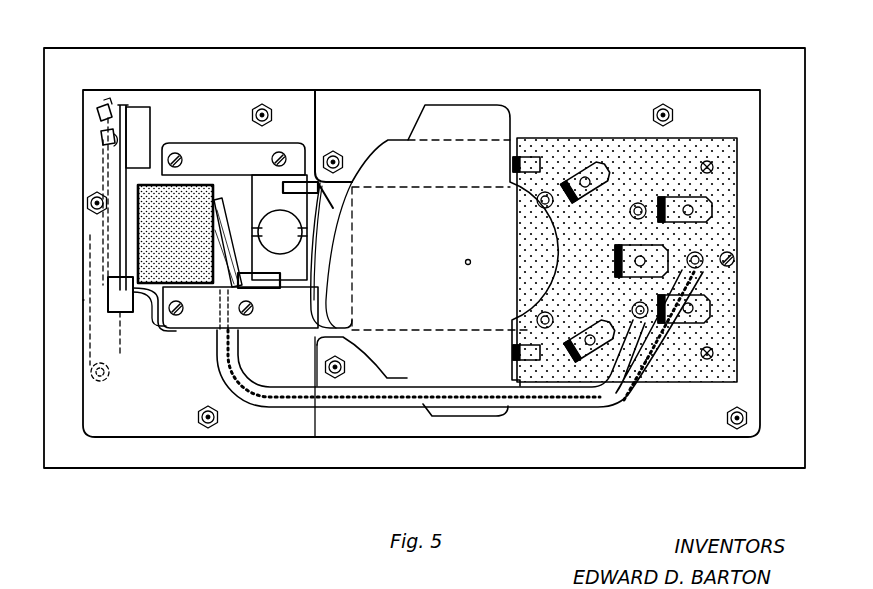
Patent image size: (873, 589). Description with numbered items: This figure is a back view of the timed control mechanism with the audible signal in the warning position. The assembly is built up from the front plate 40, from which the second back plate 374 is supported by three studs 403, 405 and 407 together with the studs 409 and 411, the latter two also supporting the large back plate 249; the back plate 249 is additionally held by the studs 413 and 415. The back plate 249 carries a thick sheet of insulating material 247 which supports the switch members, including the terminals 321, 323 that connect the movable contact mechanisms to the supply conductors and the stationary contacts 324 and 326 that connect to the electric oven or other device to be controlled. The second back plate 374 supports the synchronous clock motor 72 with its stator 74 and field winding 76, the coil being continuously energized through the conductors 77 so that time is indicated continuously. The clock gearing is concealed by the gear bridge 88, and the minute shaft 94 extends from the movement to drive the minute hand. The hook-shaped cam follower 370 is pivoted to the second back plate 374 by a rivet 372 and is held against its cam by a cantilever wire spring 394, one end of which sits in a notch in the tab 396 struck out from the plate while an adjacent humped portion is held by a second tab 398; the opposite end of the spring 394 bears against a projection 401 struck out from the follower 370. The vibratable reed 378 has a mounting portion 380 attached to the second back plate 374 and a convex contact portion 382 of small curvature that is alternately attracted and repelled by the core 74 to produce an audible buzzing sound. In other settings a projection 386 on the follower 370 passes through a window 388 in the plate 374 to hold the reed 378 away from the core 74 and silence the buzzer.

The front plate 40 is at (461, 48).
The synchronous clock motor 72 is at (328, 219).
The stator 74 is at (308, 300).
The field winding 76 is at (196, 200).
The conductors 77 is at (400, 398).
The gear bridge and cover 88 is at (462, 417).
The minute shaft 94 is at (471, 262).
The thick sheet of insulating material 247 is at (700, 137).
The large back plate 249 is at (585, 92).
The terminal 321 is at (688, 324).
The terminal 323 is at (684, 197).
The stationary contact 324 is at (588, 326).
The stationary contact 326 is at (581, 171).
The cam follower 370 is at (110, 412).
The rivet 372 is at (91, 369).
The second back plate 374 is at (302, 432).
The vibratable reed 378 is at (123, 104).
The mounting portion 380 is at (151, 126).
The convex contact portion 382 is at (170, 328).
The projection 386 is at (128, 322).
The window 388 is at (108, 284).
The cantilever wire spring 394 is at (106, 172).
The tab 396 is at (100, 105).
The second tab 398 is at (102, 136).
The projection 401 is at (100, 300).
The stud 403 is at (88, 207).
The stud 405 is at (266, 108).
The stud 407 is at (210, 429).
The stud 409 is at (337, 156).
The stud 411 is at (344, 367).
The stud 413 is at (668, 108).
The stud 415 is at (726, 418).